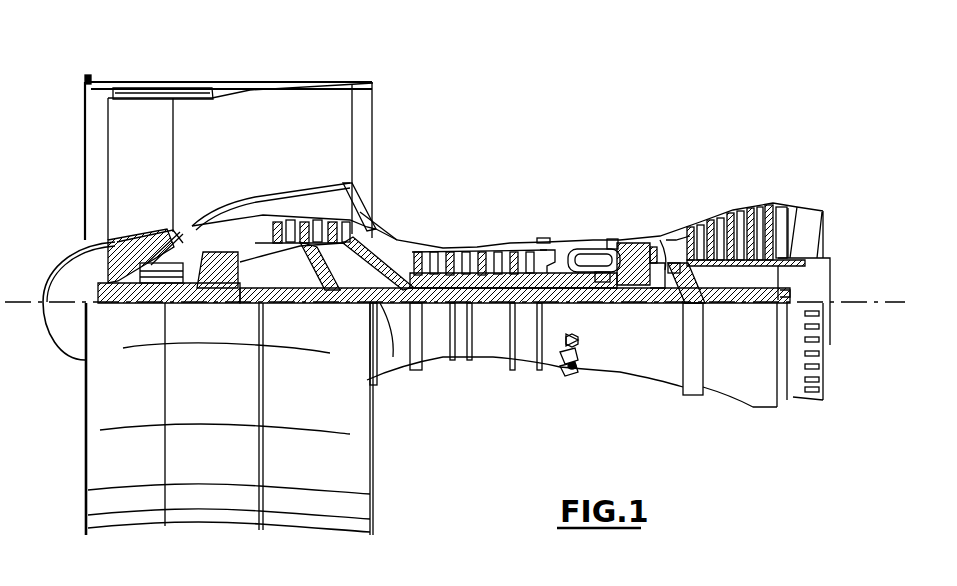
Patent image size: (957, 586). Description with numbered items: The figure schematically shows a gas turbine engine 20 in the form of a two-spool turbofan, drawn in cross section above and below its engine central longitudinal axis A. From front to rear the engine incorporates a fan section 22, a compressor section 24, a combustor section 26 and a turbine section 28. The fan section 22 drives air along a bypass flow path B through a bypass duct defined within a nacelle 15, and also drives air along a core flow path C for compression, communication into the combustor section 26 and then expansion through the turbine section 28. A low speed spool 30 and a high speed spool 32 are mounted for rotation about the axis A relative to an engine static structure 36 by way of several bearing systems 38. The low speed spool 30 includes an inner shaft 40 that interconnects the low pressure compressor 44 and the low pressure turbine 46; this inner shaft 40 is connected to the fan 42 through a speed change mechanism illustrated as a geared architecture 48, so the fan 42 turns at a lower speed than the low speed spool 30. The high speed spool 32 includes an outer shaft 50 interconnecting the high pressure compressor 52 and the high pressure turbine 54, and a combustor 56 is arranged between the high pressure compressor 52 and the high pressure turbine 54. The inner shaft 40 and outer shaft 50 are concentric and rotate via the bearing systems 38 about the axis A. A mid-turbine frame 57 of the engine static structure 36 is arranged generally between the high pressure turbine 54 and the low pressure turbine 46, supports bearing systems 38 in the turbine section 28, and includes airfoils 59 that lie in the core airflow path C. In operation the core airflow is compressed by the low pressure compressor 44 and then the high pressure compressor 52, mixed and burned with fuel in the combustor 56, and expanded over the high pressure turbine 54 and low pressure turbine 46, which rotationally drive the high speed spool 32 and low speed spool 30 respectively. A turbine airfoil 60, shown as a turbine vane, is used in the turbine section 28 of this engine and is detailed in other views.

The gas turbine engine 20 is at (587, 121).
The fan section 22 is at (180, 79).
The nacelle 15 is at (228, 84).
The fan 42 is at (158, 181).
The bypass flow path B is at (206, 141).
The core flow path C is at (235, 224).
The geared architecture 48 is at (231, 303).
The bearing systems 38 is at (338, 303).
The compressor section 24 is at (409, 229).
The low pressure compressor 44 is at (350, 190).
The inner shaft 40 is at (388, 370).
The low speed spool 30 is at (493, 304).
The engine static structure 36 is at (523, 370).
The outer shaft 50 is at (593, 303).
The high pressure compressor 52 is at (480, 250).
The high speed spool 32 is at (525, 247).
The combustor section 26 is at (583, 222).
The combustor 56 is at (580, 257).
The high pressure turbine 54 is at (635, 240).
The mid-turbine frame 57 is at (668, 230).
The turbine airfoil 60 is at (670, 237).
The airfoils 59 is at (690, 274).
The turbine section 28 is at (707, 193).
The low pressure turbine 46 is at (735, 210).
The engine central longitudinal axis A is at (898, 302).